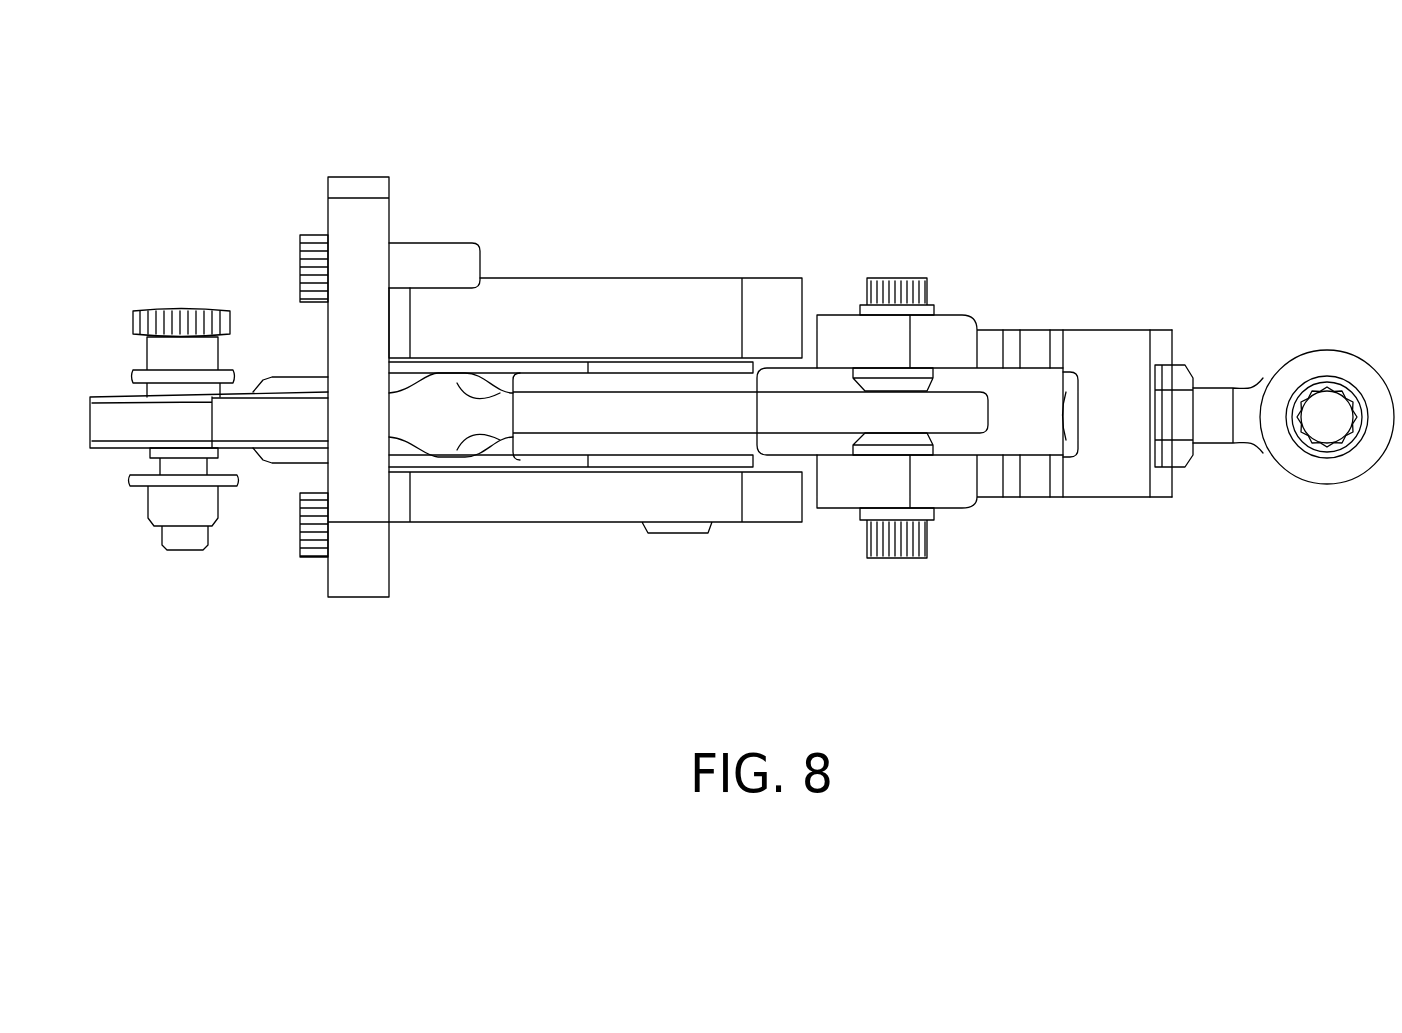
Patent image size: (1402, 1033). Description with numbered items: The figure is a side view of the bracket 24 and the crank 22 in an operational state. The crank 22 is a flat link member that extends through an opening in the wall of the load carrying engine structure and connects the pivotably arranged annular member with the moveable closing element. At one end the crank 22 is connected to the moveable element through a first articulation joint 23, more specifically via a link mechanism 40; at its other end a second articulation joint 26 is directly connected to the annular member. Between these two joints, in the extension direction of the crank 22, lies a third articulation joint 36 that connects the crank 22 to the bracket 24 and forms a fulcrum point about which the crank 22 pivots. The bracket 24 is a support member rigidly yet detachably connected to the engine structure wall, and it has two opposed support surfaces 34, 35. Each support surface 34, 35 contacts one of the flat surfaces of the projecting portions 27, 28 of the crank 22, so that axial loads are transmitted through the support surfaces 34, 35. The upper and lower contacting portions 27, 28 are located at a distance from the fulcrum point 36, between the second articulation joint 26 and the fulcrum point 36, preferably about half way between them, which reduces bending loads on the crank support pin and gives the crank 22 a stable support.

The link member 22 is at (567, 417).
The first articulation joint 23 is at (925, 260).
The support member 24 is at (598, 308).
The second articulation joint 26 is at (165, 278).
The projecting portion 27 is at (508, 385).
The projecting portion 28 is at (480, 448).
The support surface 34 is at (457, 355).
The support surface 35 is at (457, 473).
The third articulation joint 36 is at (710, 262).
The link mechanism 40 is at (1050, 523).